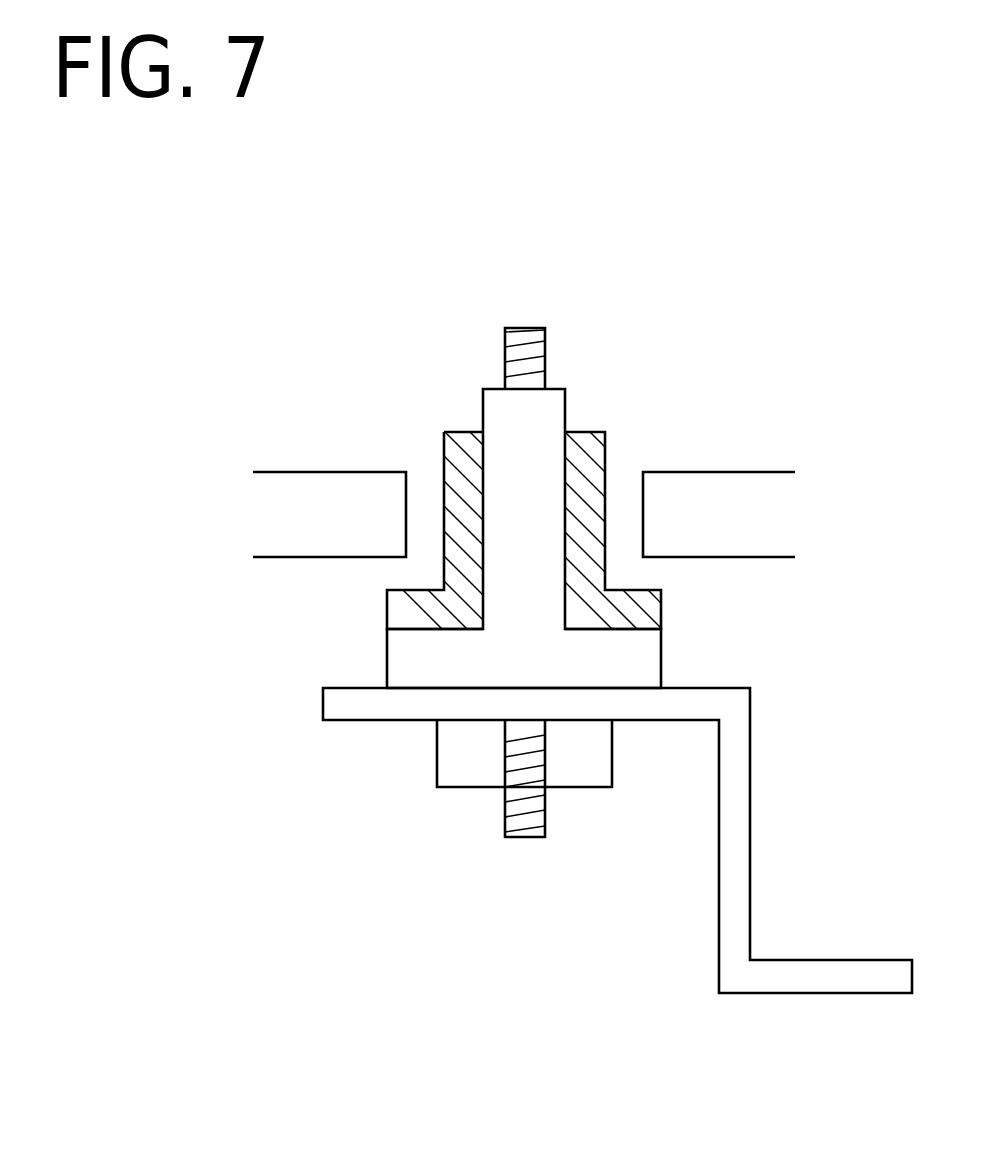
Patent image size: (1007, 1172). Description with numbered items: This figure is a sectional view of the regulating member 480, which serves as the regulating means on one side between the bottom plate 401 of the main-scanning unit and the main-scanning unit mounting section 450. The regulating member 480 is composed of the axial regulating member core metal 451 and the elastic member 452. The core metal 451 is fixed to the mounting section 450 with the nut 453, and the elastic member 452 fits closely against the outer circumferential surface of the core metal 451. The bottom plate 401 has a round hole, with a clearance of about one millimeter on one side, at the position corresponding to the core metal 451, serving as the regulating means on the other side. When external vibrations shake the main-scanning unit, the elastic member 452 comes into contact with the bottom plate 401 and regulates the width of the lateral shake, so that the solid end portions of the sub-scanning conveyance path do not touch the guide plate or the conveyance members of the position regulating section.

The regulating member 480 is at (530, 287).
The bottom plate 401 is at (307, 471).
The elastic member 452 is at (607, 457).
The axial regulating member core metal 451 is at (595, 662).
The nut 453 is at (580, 788).
The main-scanning unit mounting section 450 is at (821, 960).